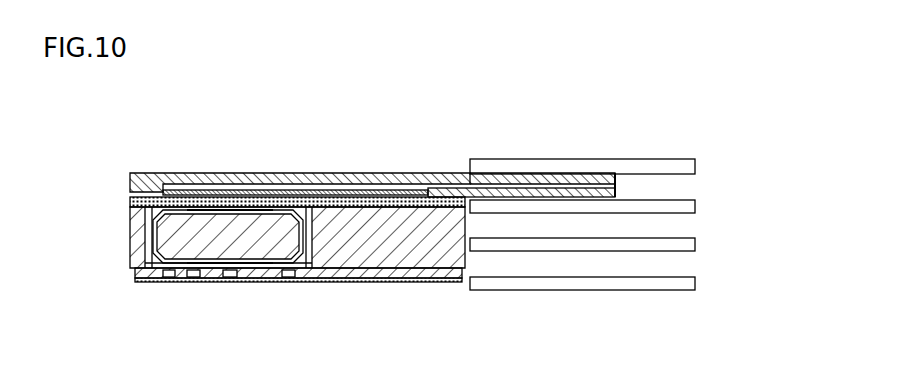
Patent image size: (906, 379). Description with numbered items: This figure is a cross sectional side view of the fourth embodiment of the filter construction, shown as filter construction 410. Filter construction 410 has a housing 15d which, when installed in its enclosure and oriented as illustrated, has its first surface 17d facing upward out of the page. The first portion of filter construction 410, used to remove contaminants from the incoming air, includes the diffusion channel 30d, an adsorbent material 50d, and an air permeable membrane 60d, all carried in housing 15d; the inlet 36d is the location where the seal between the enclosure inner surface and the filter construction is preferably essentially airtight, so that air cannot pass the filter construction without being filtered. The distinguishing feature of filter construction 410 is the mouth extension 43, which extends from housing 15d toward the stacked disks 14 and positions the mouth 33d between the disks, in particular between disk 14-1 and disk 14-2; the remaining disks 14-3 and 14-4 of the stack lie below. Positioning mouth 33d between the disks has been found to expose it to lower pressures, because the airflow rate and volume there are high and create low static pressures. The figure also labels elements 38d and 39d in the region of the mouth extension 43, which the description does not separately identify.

The filter construction 410 is at (367, 122).
The housing 15d is at (230, 173).
The first surface 17d is at (155, 175).
The mouth extension 43 is at (562, 175).
The wiring layer 38d is at (258, 199).
The insulating layer 39d is at (380, 194).
The mouth 33d is at (617, 182).
The air permeable membrane 60d is at (130, 202).
The adsorbent material 50d is at (150, 239).
The inlet 36d is at (228, 285).
The diffusion channel 30d is at (167, 282).
The stacked disks 14 is at (695, 288).
The disk 14-1 is at (655, 161).
The disk 14-2 is at (653, 204).
The third lead 14-3 is at (655, 240).
The fourth lead 14-4 is at (655, 279).